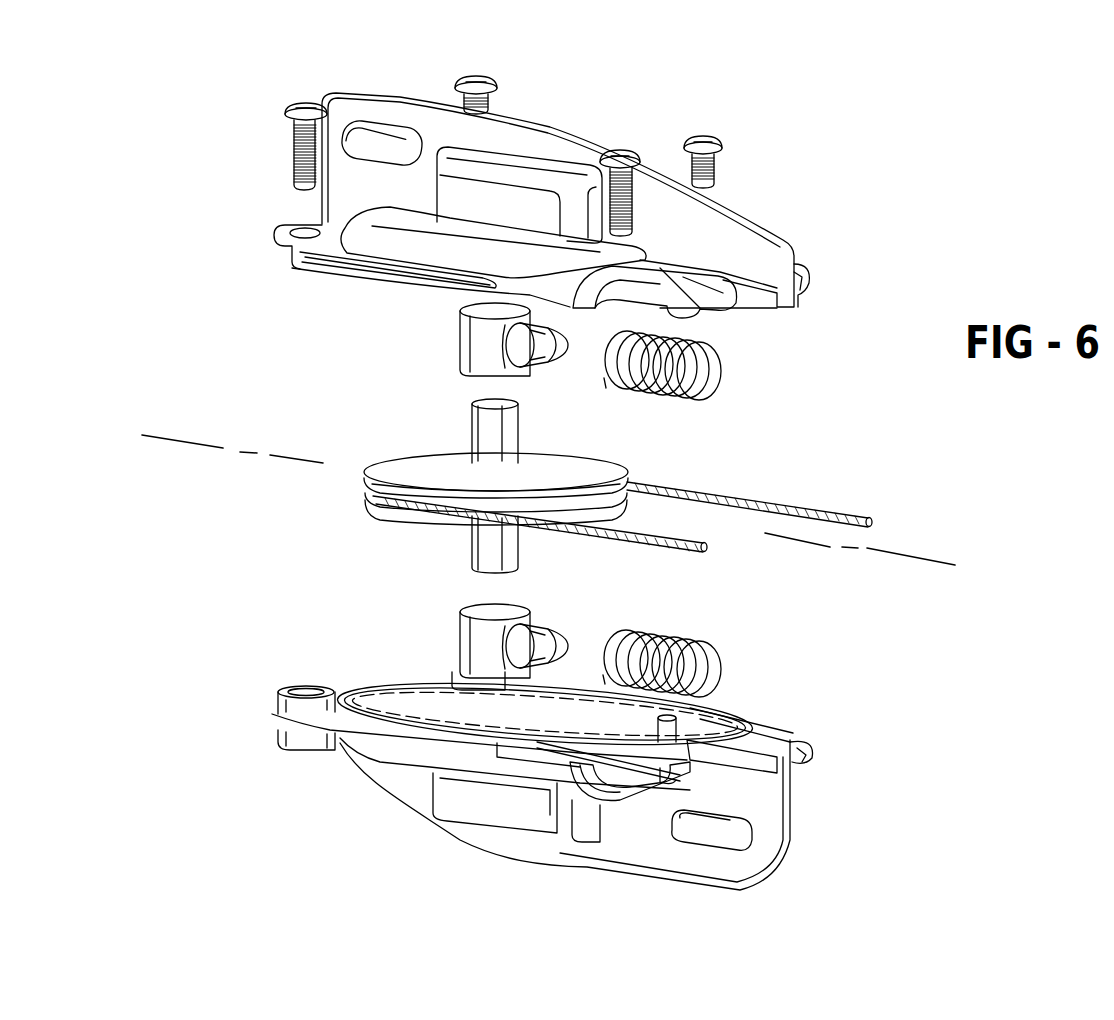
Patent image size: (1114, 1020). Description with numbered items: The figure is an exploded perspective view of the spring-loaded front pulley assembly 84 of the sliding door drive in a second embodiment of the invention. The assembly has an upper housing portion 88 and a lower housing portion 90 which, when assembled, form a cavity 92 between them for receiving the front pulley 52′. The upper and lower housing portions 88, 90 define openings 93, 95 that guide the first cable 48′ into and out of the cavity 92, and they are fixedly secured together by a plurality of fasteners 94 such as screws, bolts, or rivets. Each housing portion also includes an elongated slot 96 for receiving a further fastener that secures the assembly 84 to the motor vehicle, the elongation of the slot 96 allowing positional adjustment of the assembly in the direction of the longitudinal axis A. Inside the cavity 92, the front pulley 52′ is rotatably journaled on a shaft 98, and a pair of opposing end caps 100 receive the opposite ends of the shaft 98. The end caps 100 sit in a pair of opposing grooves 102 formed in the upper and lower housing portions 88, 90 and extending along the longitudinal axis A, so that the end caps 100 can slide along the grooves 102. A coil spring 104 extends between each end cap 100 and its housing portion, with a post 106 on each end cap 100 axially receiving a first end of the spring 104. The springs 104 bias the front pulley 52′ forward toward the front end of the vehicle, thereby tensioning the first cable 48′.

The spring-loaded front pulley assembly 84 is at (254, 349).
The upper housing portion 88 is at (747, 207).
The lower housing portion 90 is at (493, 853).
The cavity 92 is at (410, 700).
The opening 93 is at (690, 317).
The fasteners 94 is at (306, 101).
The opening 95 is at (797, 277).
The slot 96 is at (395, 137).
The shaft 98 is at (518, 433).
The end caps 100 is at (460, 352).
The grooves 102 is at (512, 177).
The coil spring 104 is at (637, 393).
The post 106 is at (540, 357).
The front pulley 52′ is at (442, 465).
The first cable 48′ is at (657, 548).
The longitudinal axis A is at (202, 452).